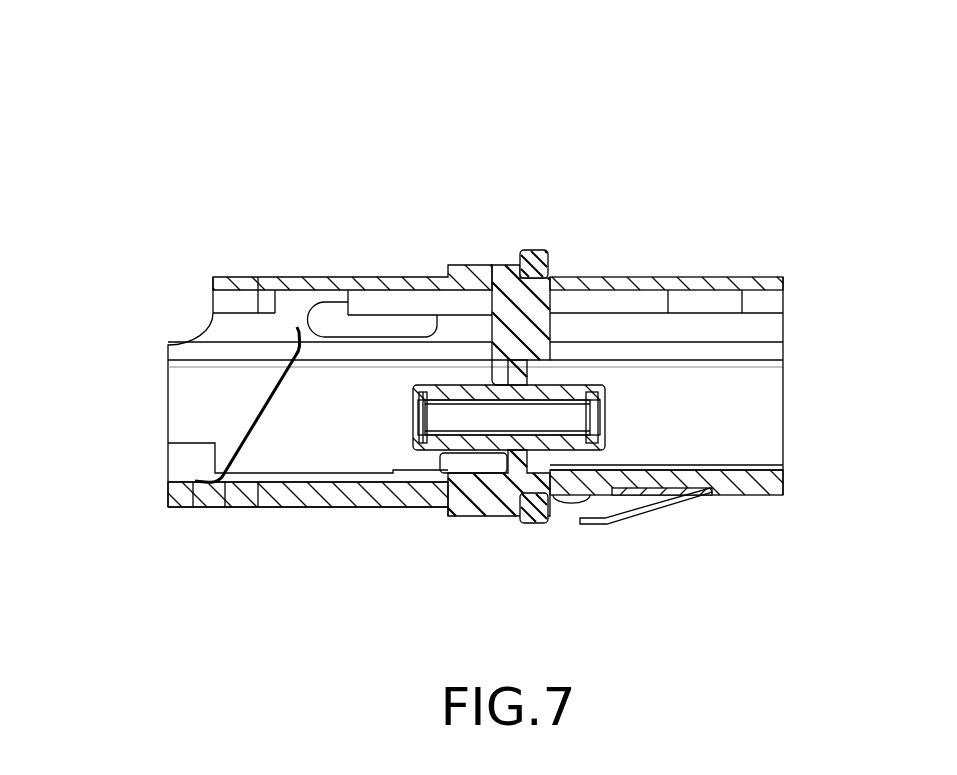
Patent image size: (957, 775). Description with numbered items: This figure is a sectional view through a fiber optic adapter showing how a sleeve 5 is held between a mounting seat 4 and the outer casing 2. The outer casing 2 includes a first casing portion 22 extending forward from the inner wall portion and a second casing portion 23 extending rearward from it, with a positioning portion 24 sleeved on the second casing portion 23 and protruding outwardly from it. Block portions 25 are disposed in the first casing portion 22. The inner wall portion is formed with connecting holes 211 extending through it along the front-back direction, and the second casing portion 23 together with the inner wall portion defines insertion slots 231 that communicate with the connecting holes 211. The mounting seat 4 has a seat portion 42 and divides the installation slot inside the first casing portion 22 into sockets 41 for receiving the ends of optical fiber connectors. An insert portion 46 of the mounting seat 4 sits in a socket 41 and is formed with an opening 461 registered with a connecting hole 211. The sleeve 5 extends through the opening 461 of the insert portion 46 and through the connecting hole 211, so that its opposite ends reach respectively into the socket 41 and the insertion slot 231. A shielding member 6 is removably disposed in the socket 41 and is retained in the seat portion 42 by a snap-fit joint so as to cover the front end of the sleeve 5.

The outer casing 2 is at (663, 213).
The mounting seat 4 is at (155, 290).
The sleeve 5 is at (453, 440).
The shielding member 6 is at (253, 423).
The first casing portion 22 is at (338, 283).
The second casing portion 23 is at (753, 277).
The positioning portion 24 is at (530, 250).
The block portion 25 is at (518, 475).
The socket 41 is at (195, 385).
The seat portion 42 is at (182, 507).
The insert portion 46 is at (413, 387).
The opening 461 is at (428, 415).
The connecting hole 211 is at (557, 432).
The insertion slot 231 is at (755, 405).